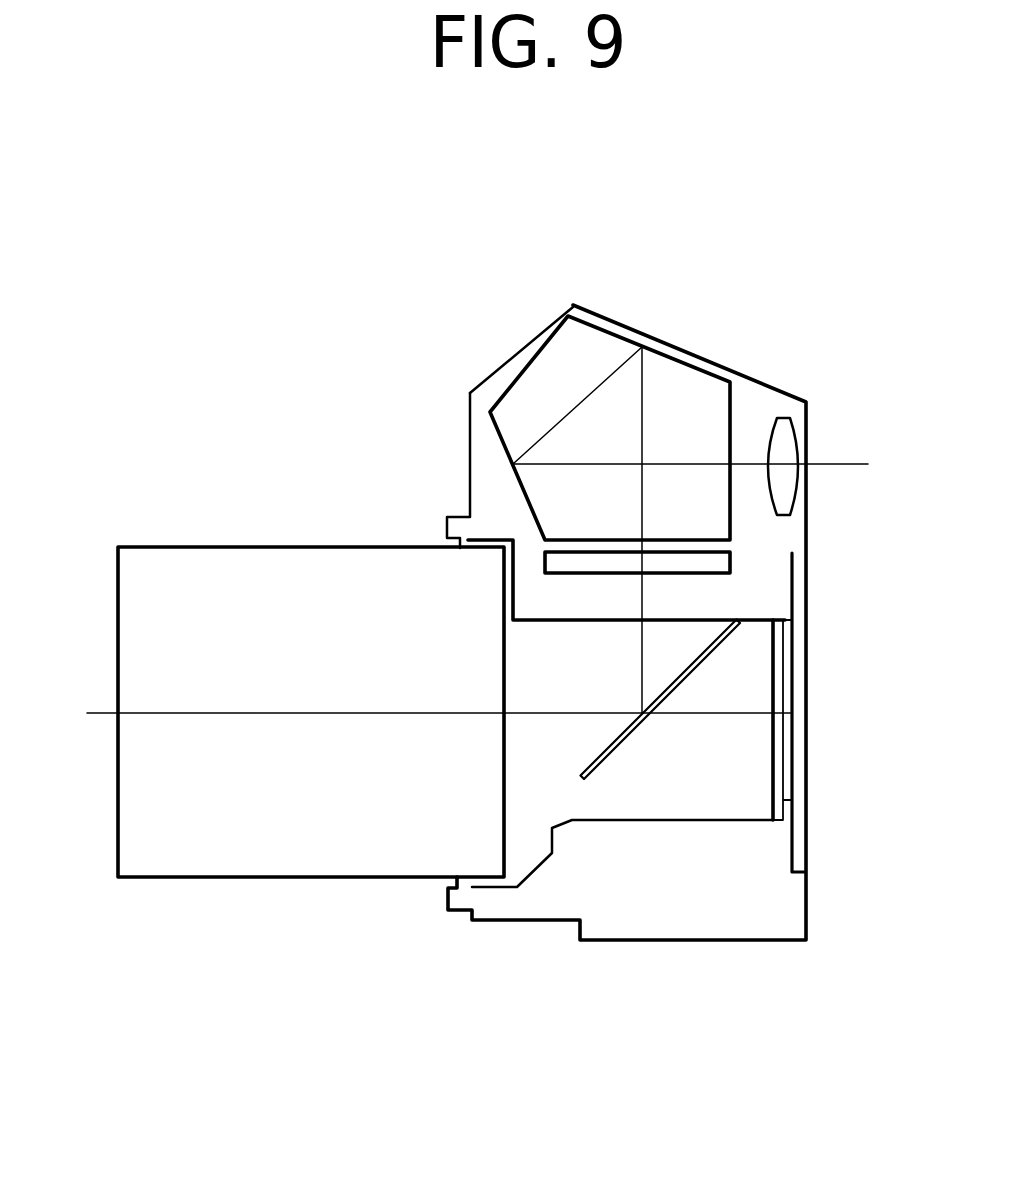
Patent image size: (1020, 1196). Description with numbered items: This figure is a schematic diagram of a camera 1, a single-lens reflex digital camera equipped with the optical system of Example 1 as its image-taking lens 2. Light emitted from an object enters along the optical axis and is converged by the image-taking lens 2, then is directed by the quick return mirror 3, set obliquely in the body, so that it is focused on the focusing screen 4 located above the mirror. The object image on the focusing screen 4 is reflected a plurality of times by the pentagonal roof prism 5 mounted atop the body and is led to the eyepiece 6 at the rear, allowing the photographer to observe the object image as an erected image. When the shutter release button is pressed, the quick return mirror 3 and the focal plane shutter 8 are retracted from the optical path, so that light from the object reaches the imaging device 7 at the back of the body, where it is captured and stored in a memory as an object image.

The camera 1 is at (168, 330).
The image-taking lens 2 is at (208, 575).
The quick return mirror 3 is at (610, 748).
The focusing screen 4 is at (730, 557).
The pentagonal roof prism 5 is at (593, 350).
The eyepiece 6 is at (783, 442).
The imaging device 7 is at (807, 745).
The focal plane shutter 8 is at (773, 800).